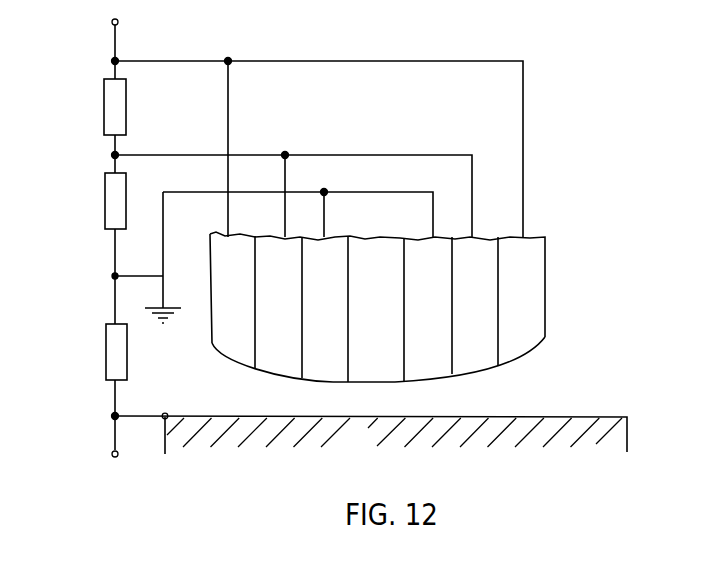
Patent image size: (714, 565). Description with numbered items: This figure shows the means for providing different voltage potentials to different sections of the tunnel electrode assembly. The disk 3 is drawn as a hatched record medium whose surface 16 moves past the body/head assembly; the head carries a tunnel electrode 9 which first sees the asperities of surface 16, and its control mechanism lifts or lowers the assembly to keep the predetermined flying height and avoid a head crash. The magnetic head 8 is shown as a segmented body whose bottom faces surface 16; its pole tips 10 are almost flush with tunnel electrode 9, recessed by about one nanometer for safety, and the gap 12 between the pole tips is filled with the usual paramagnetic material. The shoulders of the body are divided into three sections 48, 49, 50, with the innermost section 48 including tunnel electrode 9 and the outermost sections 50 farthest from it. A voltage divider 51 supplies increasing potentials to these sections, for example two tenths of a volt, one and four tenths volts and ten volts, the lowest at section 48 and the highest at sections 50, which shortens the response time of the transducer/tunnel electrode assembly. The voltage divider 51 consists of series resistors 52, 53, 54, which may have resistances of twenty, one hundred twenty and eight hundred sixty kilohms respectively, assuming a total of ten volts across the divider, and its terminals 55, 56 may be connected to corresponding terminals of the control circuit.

The disk 3 is at (375, 456).
The magnetic head 8 is at (372, 246).
The tunnel electrode 9 is at (338, 389).
The pole tip 10 is at (396, 388).
The gap 12 is at (470, 359).
The surface 16 is at (549, 410).
The innermost section 48 is at (336, 354).
The section 49 is at (289, 324).
The section 50 is at (241, 300).
The voltage divider 51 is at (97, 232).
The resistor 52 is at (127, 360).
The resistor 53 is at (126, 188).
The resistor 54 is at (126, 107).
The terminal 55 is at (118, 20).
The terminal 56 is at (117, 457).